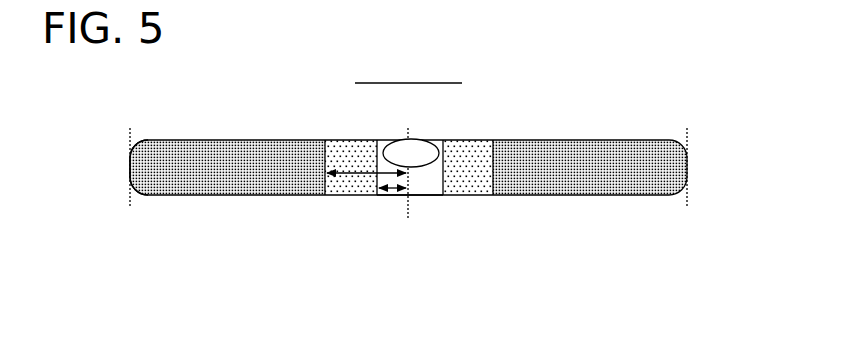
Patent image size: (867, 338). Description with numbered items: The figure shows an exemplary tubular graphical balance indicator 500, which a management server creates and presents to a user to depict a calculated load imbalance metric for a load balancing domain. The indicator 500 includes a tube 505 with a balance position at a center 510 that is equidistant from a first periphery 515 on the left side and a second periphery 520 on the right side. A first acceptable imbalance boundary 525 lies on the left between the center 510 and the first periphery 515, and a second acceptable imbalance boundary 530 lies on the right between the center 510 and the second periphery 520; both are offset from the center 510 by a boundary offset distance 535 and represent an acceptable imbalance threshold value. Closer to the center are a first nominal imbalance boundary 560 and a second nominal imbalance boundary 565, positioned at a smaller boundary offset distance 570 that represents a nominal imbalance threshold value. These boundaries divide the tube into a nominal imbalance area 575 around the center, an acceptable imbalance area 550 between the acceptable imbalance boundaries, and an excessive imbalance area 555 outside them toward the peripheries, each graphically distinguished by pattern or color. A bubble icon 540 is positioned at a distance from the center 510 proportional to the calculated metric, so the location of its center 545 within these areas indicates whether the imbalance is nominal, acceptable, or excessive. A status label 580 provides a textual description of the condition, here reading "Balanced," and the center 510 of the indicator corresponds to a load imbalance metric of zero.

The tubular graphical balance indicator 500 is at (652, 65).
The tube 505 is at (160, 196).
The center 510 is at (408, 214).
The first periphery 515 is at (129, 203).
The second periphery 520 is at (686, 199).
The first acceptable imbalance boundary 525 is at (322, 190).
The second acceptable imbalance boundary 530 is at (497, 193).
The boundary offset distance 535 is at (328, 170).
The bubble icon 540 is at (390, 146).
The center of bubble icon 545 is at (410, 134).
The acceptable imbalance area 550 is at (347, 143).
The excessive imbalance area 555 is at (221, 142).
The first nominal imbalance boundary 560 is at (374, 192).
The second nominal imbalance boundary 565 is at (448, 195).
The boundary offset distance 570 is at (385, 193).
The nominal imbalance area 575 is at (418, 197).
The status label 580 is at (350, 66).